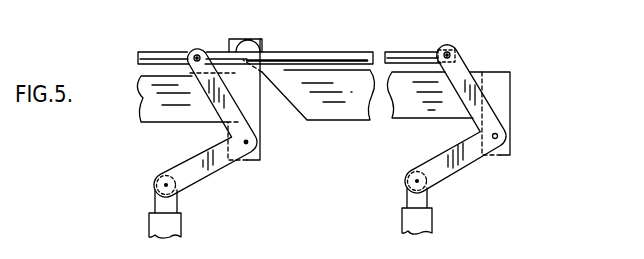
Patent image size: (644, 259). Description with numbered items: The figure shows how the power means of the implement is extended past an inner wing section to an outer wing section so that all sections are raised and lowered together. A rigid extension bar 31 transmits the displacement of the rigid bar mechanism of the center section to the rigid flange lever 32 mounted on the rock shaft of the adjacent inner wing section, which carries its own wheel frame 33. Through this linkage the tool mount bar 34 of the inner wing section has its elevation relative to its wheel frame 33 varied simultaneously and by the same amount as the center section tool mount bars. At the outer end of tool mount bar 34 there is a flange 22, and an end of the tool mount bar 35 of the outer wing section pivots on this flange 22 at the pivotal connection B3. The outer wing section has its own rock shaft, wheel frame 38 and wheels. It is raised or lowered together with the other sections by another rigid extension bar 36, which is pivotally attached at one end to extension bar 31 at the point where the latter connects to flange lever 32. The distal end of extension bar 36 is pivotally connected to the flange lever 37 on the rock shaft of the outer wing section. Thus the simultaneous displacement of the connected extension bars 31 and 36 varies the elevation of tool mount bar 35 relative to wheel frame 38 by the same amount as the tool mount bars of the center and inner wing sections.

The flange 22 is at (262, 108).
The rigid extension bar 31 is at (144, 52).
The flange lever 32 is at (193, 47).
The wheel frame 33 is at (182, 222).
The tool mount bar 34 is at (169, 123).
The tool mount bar 35 is at (345, 121).
The rigid extension bar 36 is at (305, 50).
The flange lever 37 is at (465, 63).
The wheel frame 38 is at (430, 215).
The pivotal connection B3 is at (253, 47).